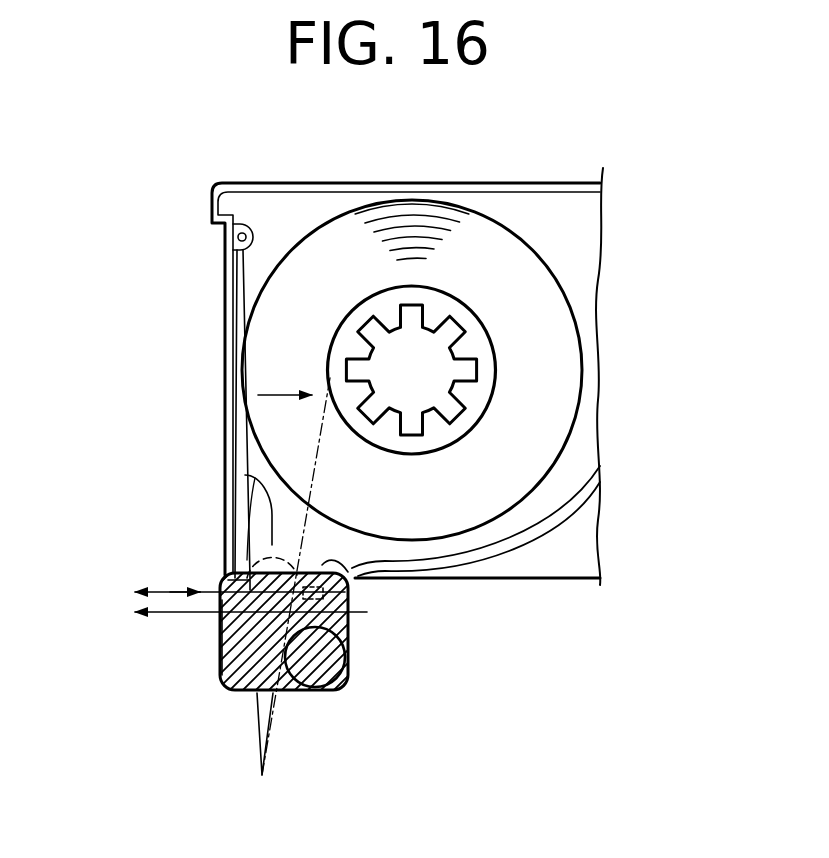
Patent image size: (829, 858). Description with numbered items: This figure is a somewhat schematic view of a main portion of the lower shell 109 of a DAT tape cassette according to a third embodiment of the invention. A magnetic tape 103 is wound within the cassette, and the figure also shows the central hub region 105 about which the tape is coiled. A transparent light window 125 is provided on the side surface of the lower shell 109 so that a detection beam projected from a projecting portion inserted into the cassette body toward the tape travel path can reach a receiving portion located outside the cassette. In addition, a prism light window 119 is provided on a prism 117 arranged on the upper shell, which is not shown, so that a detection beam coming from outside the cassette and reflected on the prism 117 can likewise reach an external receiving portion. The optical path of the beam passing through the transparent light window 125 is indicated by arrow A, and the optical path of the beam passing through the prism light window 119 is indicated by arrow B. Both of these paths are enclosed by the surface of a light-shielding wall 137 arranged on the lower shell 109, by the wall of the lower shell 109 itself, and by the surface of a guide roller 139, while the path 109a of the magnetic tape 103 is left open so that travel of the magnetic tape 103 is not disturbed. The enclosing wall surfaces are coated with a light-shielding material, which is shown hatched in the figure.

The magnetic tape 103 is at (482, 240).
The hub with gear-shaped center hole 105 is at (496, 368).
The lower shell 109 is at (345, 182).
The path of the magnetic tape 109a is at (247, 483).
The prism 117 is at (347, 595).
The prism light window 119 is at (224, 574).
The transparent light window 125 is at (222, 648).
The light-shielding wall 137 is at (236, 546).
The guide roller 139 is at (348, 673).
The optical path of the detection beam passing through the transparent light window A is at (173, 612).
The optical path of the detection beam passing through the prism light window B is at (173, 592).